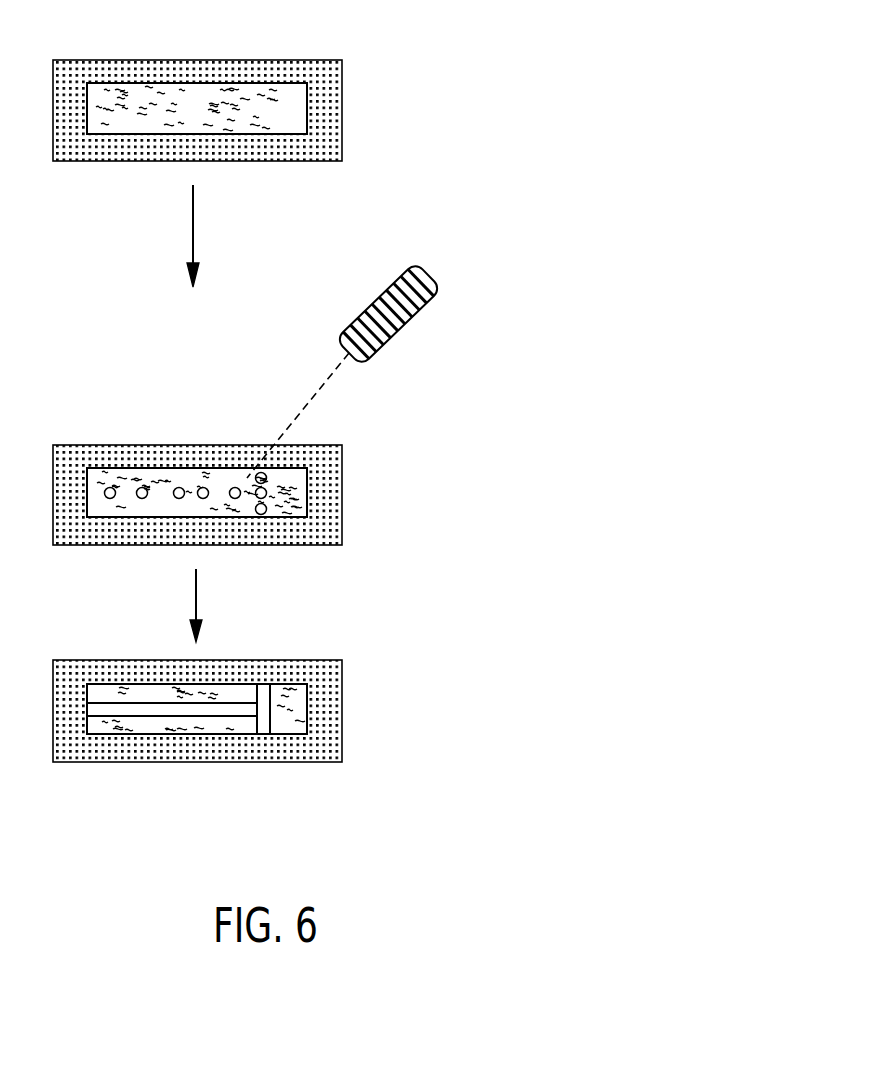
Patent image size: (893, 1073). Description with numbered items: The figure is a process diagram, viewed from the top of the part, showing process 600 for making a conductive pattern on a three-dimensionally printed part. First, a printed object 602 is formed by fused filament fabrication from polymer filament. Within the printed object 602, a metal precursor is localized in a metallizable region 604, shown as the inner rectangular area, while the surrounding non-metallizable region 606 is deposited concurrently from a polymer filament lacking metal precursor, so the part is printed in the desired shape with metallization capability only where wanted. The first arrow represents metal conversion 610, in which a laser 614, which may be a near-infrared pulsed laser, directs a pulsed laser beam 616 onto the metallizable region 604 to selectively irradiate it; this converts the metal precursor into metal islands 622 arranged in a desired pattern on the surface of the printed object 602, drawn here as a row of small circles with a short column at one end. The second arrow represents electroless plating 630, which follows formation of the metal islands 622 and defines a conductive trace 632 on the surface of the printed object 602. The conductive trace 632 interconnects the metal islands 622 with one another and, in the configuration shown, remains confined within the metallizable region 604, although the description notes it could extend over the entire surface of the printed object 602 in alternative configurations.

The process 600 is at (507, 86).
The printed object 602 is at (340, 152).
The metallizable region 604 is at (290, 100).
The non-metallizable region 606 is at (330, 117).
The metal conversion 610 is at (194, 232).
The laser 614 is at (440, 277).
The pulsed laser beam 616 is at (298, 412).
The metal islands 622 is at (179, 498).
The electroless plating 630 is at (197, 603).
The conductive trace 632 is at (140, 716).